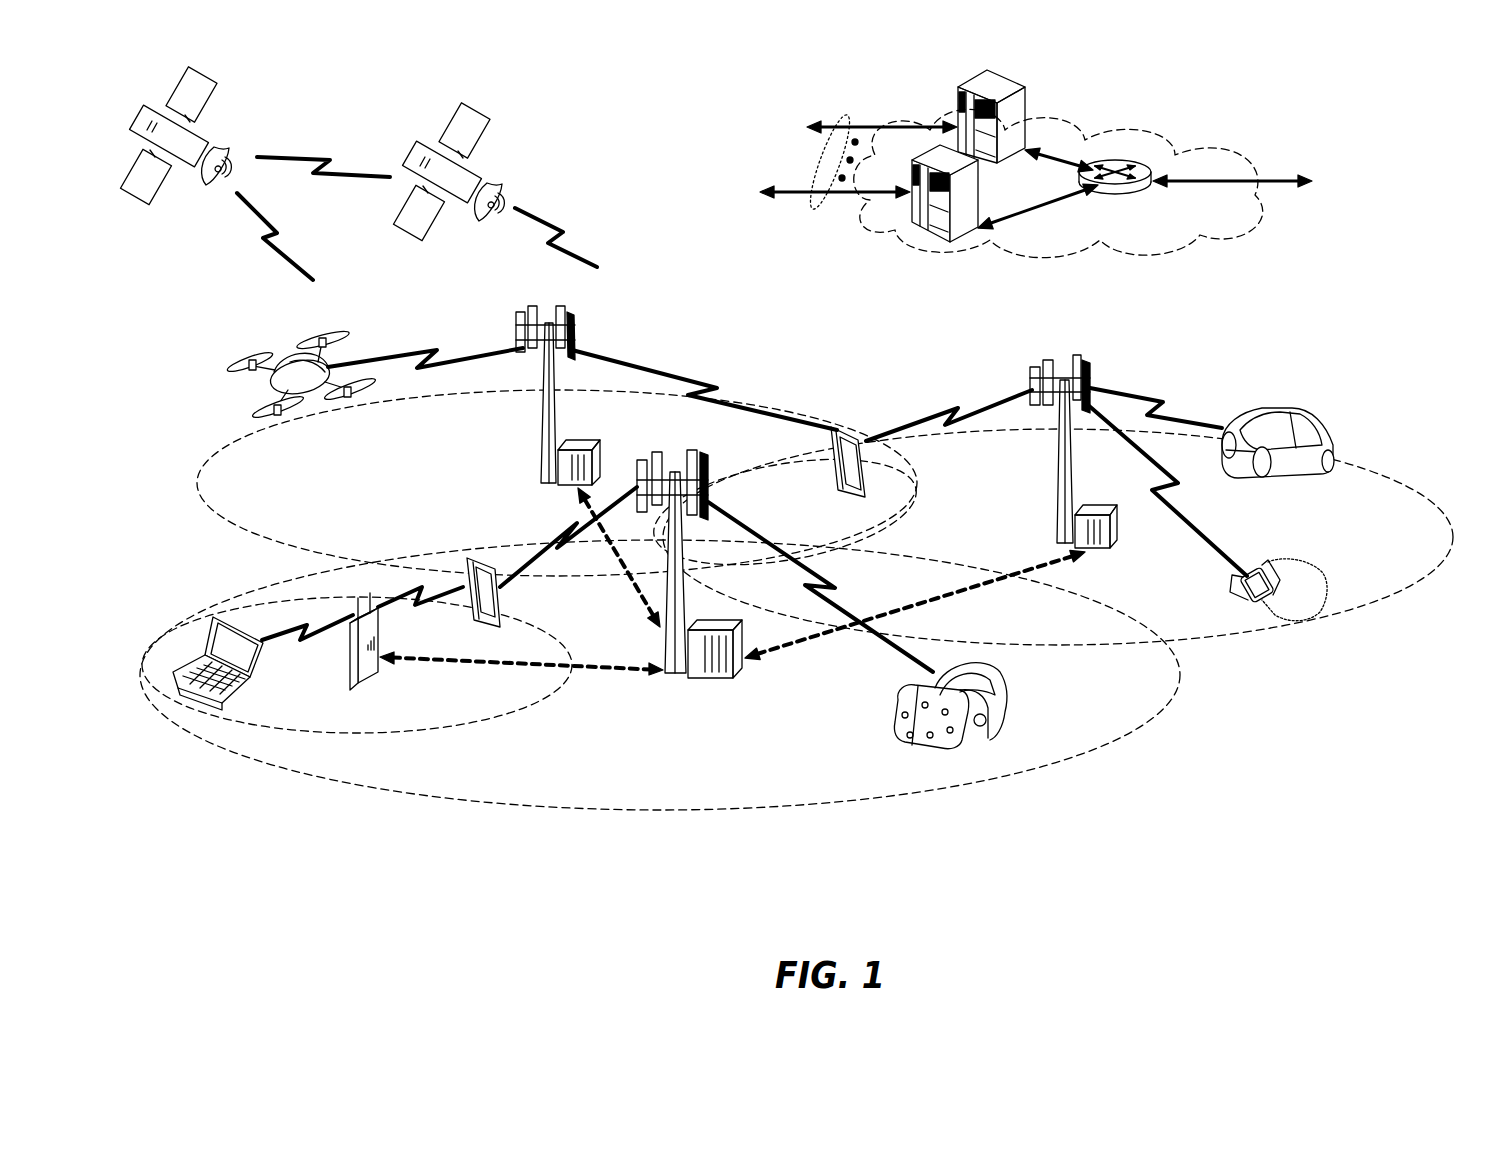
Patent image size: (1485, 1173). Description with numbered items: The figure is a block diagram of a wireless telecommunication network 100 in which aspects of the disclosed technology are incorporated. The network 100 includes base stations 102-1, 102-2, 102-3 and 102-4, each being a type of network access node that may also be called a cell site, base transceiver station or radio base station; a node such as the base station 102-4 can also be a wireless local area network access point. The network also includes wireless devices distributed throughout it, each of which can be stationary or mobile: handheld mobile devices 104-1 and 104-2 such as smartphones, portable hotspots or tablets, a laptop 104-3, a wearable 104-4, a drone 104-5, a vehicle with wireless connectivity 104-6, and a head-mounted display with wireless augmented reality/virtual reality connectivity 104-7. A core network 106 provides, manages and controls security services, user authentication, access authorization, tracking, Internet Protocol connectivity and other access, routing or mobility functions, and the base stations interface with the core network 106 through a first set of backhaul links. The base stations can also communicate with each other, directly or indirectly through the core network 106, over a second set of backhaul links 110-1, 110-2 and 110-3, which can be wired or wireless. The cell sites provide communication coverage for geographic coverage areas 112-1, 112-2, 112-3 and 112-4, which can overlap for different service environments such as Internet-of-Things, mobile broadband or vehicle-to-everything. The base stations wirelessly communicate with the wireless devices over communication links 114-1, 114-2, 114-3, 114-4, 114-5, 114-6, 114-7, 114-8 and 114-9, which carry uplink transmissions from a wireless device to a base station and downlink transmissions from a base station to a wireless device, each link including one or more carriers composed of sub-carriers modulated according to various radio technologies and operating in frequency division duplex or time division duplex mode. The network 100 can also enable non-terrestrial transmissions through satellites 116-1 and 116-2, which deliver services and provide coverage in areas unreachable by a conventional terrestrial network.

The wireless telecommunication network 100 is at (1387, 133).
The base station 102-1 is at (677, 677).
The base station 102-2 is at (543, 430).
The base station 102-3 is at (1057, 468).
The base station 102-4 is at (352, 665).
The handheld mobile device 104-1 is at (503, 605).
The handheld mobile device 104-2 is at (830, 460).
The laptop 104-3 is at (197, 703).
The wearable 104-4 is at (1262, 568).
The drone 104-5 is at (308, 400).
The vehicle with wireless connectivity 104-6 is at (1300, 420).
The head-mounted display 104-7 is at (1007, 693).
The core network 106 is at (1147, 243).
The backhaul link 110-1 is at (420, 662).
The backhaul link 110-2 is at (988, 598).
The backhaul link 110-3 is at (637, 585).
The geographic coverage area 112-1 is at (600, 812).
The geographic coverage area 112-2 is at (483, 718).
The geographic coverage area 112-3 is at (255, 540).
The geographic coverage area 112-4 is at (1352, 462).
The communication link 114-1 is at (845, 600).
The communication link 114-2 is at (560, 545).
The communication link 114-3 is at (273, 643).
The communication link 114-4 is at (423, 607).
The communication link 114-5 is at (430, 352).
The communication link 114-6 is at (706, 387).
The communication link 114-7 is at (950, 412).
The communication link 114-8 is at (1182, 505).
The communication link 114-9 is at (1150, 408).
The satellite 116-1 is at (222, 148).
The satellite 116-2 is at (497, 183).